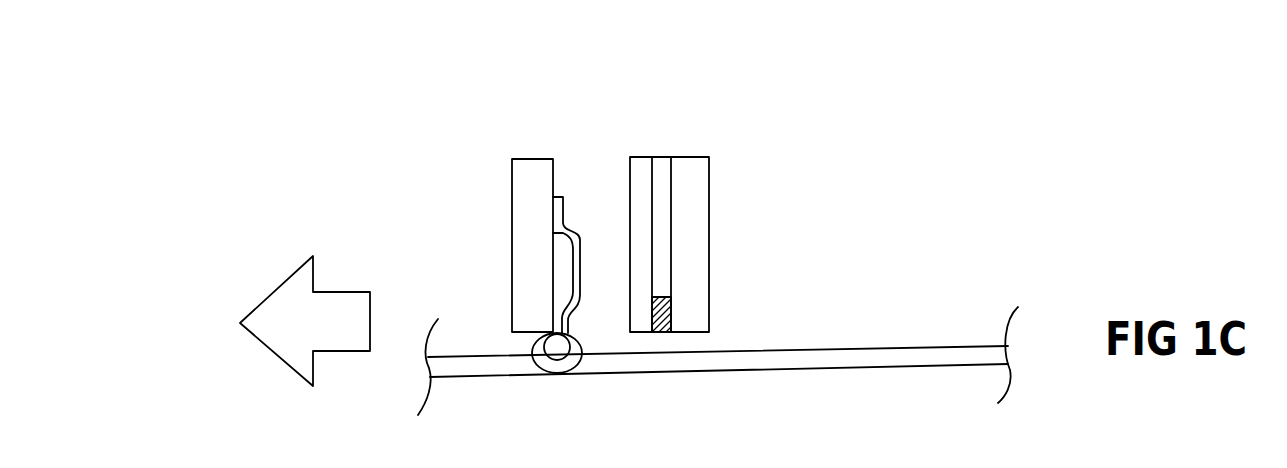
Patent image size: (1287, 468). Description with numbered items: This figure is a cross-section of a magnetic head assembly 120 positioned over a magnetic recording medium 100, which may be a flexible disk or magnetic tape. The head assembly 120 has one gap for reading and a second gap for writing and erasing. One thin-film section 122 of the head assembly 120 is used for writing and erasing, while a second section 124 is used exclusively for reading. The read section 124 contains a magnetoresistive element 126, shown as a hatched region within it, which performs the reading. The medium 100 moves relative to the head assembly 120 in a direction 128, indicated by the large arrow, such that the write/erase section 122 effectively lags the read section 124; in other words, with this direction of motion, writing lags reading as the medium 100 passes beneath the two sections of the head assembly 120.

The magnetic recording medium 100 is at (950, 347).
The magnetic head assembly 120 is at (794, 113).
The thin-film section 122 is at (530, 158).
The second section 124 is at (699, 157).
The magnetoresistive element 126 is at (665, 332).
The direction 128 is at (316, 291).